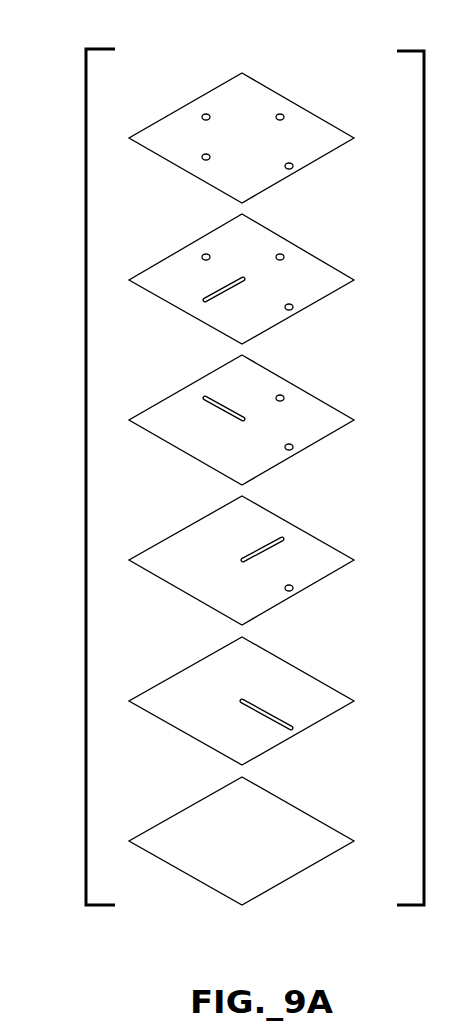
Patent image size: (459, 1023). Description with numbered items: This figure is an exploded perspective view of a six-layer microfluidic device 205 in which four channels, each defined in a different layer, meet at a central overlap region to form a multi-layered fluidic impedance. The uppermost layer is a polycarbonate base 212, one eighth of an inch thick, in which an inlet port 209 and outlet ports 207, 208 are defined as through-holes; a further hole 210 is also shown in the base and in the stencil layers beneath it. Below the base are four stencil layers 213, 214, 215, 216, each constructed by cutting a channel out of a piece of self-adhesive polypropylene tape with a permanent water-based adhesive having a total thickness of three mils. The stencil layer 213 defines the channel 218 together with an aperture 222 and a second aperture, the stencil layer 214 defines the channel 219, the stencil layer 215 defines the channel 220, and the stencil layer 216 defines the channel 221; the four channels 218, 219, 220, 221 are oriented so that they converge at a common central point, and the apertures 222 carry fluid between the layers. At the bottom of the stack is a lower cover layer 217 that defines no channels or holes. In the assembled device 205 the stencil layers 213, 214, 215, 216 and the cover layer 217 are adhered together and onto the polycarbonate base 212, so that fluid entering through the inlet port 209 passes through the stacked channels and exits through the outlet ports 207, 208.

The device 205 is at (78, 434).
The outlet port 207 is at (205, 114).
The outlet port 208 is at (282, 114).
The inlet port 209 is at (289, 169).
The hole 210 is at (204, 160).
The polycarbonate base 212 is at (340, 150).
The stencil layer 213 is at (343, 290).
The stencil layer 214 is at (335, 435).
The stencil layer 215 is at (335, 575).
The stencil layer 216 is at (335, 715).
The lower cover layer 217 is at (335, 855).
The channel 218 is at (204, 297).
The channel 219 is at (204, 395).
The channel 220 is at (243, 557).
The channel 221 is at (260, 714).
The aperture 222 is at (205, 254).